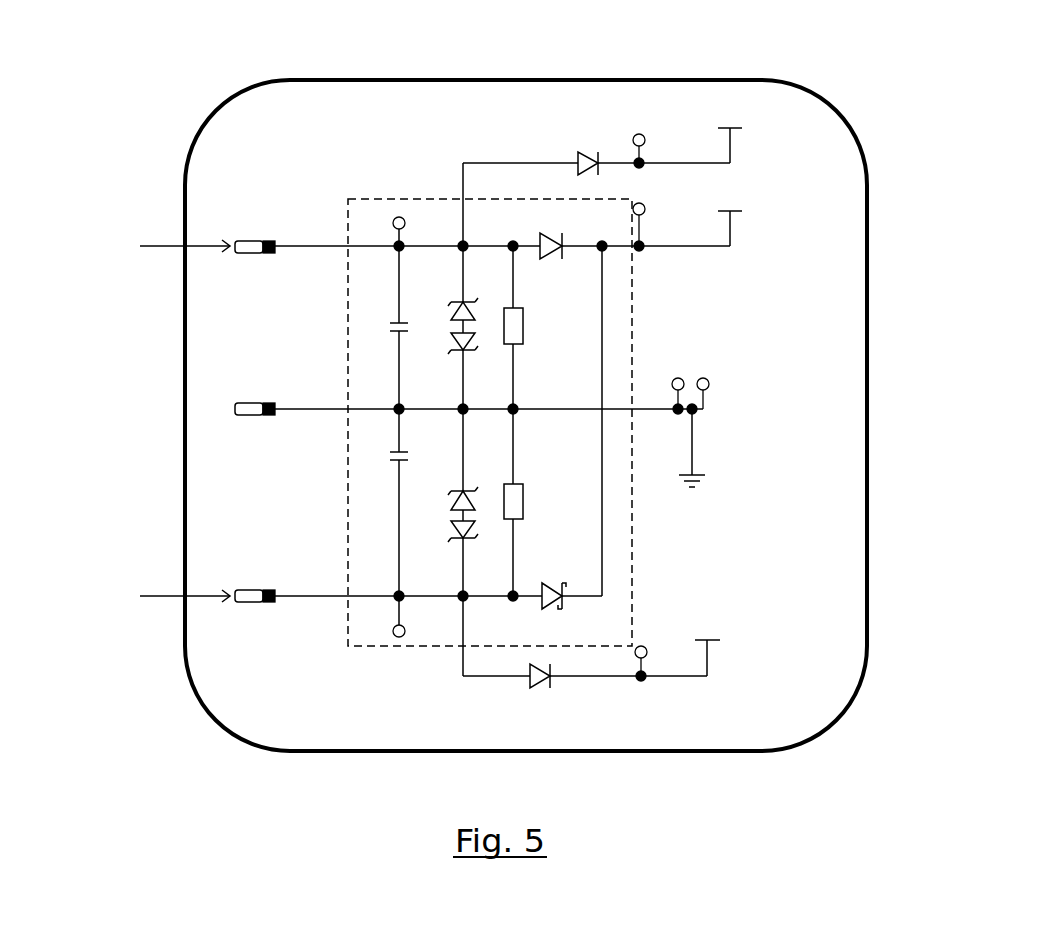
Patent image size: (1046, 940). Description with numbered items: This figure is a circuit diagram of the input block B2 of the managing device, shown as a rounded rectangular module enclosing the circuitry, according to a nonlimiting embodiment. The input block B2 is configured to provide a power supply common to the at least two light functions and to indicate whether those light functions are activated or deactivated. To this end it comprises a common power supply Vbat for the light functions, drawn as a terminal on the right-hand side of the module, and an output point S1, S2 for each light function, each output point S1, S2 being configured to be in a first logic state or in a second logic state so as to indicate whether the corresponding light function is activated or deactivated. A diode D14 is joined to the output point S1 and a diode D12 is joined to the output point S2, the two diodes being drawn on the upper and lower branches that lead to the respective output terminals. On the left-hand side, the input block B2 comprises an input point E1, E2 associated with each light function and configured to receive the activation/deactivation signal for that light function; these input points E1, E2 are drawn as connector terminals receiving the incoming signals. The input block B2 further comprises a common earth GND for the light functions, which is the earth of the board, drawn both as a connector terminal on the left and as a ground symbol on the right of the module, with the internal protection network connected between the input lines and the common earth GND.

The input block B2 is at (535, 80).
The input point E1 is at (296, 239).
The input point E2 is at (297, 582).
The common earth GND is at (495, 433).
The common power supply Vbat is at (643, 221).
The diode D14 is at (551, 144).
The diode D12 is at (552, 691).
The output point S1 is at (718, 134).
The output point S2 is at (714, 644).